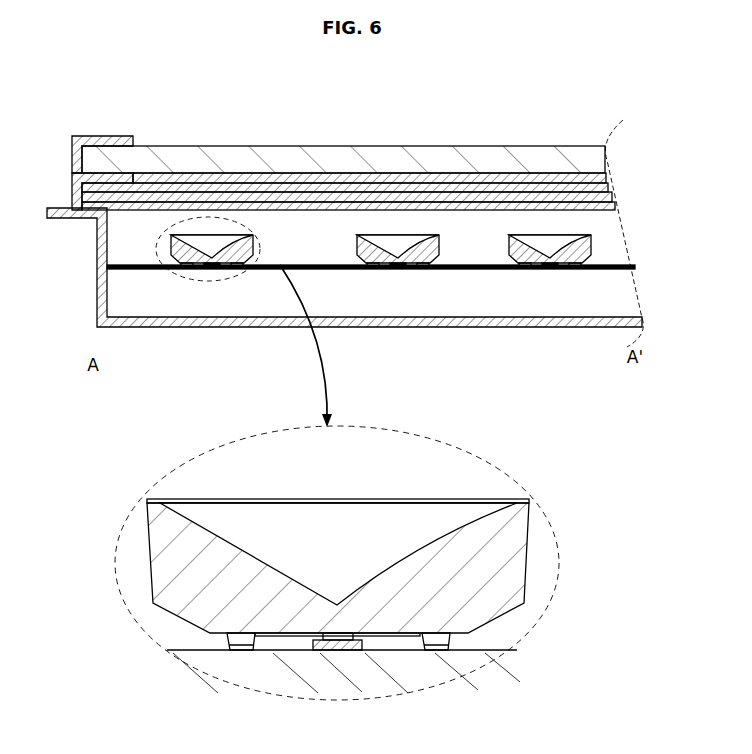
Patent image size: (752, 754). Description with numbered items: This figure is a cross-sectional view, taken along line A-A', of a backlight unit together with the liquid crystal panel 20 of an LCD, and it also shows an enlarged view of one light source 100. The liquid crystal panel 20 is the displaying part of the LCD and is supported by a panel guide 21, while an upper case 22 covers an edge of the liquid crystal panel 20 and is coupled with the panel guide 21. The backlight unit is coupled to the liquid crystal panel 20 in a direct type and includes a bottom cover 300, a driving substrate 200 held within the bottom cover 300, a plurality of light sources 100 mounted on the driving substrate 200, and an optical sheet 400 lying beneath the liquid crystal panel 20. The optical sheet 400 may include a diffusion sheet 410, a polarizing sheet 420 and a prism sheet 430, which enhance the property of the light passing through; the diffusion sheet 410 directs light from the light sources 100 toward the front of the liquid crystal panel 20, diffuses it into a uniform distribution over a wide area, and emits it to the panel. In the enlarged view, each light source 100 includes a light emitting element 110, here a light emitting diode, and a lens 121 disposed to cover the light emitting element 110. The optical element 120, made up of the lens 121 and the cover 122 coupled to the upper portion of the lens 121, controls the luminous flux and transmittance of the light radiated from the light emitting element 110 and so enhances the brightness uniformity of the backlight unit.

The liquid crystal panel 20 is at (178, 160).
The panel guide 21 is at (72, 188).
The upper case 22 is at (72, 150).
The optical sheet 400 is at (348, 141).
The diffusion sheet 410 is at (348, 198).
The polarizing sheet 420 is at (309, 190).
The prism sheet 430 is at (262, 178).
The driving substrate 200 is at (374, 290).
The bottom cover 300 is at (546, 327).
The light source 100 is at (389, 551).
The light emitting element 110 is at (383, 655).
The optical element 120 is at (405, 564).
The lens 121 is at (528, 532).
The cover 122 is at (530, 500).